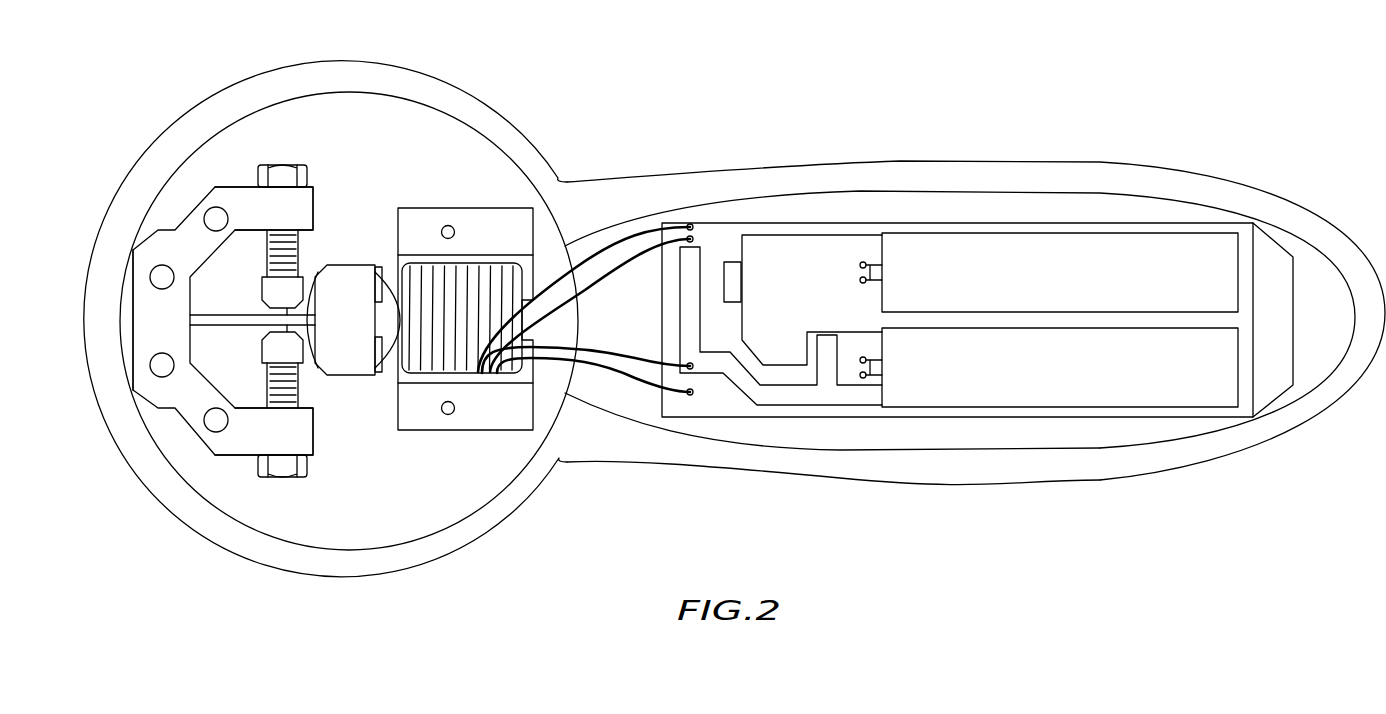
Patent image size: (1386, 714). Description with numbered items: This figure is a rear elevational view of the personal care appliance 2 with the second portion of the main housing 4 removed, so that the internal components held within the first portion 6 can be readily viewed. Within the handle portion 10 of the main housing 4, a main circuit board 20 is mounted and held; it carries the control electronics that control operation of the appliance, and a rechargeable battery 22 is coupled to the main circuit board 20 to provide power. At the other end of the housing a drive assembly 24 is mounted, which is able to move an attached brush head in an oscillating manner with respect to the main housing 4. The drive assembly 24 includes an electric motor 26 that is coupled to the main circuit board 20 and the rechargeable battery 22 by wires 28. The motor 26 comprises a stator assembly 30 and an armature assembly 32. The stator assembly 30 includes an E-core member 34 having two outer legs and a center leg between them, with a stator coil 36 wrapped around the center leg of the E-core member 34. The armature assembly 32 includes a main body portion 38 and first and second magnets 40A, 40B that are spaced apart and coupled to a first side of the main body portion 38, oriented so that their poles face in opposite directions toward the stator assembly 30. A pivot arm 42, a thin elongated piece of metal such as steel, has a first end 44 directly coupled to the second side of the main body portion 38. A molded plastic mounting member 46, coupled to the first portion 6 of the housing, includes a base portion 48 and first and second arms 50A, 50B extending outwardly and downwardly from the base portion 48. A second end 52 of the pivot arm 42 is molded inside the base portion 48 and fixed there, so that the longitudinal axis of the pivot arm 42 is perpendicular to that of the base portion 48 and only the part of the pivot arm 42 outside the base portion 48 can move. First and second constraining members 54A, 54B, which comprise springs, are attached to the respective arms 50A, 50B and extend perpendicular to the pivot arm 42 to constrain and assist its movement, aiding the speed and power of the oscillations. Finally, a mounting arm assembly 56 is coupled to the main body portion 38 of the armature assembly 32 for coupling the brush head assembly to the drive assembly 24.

The personal care appliance 2 is at (747, 113).
The main housing 4 is at (588, 180).
The first portion 6 is at (620, 450).
The handle portion 10 is at (1060, 168).
The main circuit board 20 is at (725, 400).
The rechargeable battery 22 is at (1230, 345).
The drive assembly 24 is at (363, 423).
The electric motor 26 is at (405, 207).
The wires 28 is at (650, 252).
The stator assembly 30 is at (473, 207).
The armature assembly 32 is at (342, 263).
The E-core member 34 is at (510, 223).
The stator coil 36 is at (433, 360).
The main body portion 38 is at (339, 360).
The first magnet 40A is at (379, 354).
The second magnet 40B is at (383, 284).
The pivot arm 42 is at (246, 314).
The first end 44 is at (309, 281).
The mounting member 46 is at (190, 231).
The base portion 48 is at (148, 312).
The first arm 50A is at (248, 440).
The second arm 50B is at (250, 198).
The second end 52 is at (192, 330).
The first constraining member 54A is at (271, 393).
The second constraining member 54B is at (271, 268).
The mounting arm assembly 56 is at (389, 316).